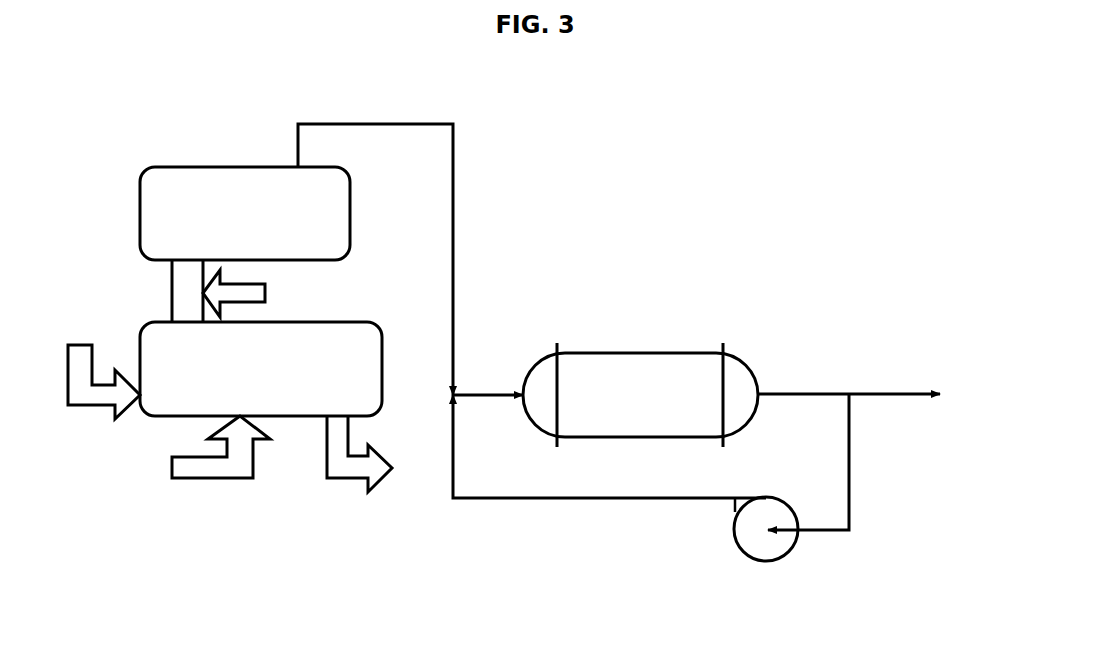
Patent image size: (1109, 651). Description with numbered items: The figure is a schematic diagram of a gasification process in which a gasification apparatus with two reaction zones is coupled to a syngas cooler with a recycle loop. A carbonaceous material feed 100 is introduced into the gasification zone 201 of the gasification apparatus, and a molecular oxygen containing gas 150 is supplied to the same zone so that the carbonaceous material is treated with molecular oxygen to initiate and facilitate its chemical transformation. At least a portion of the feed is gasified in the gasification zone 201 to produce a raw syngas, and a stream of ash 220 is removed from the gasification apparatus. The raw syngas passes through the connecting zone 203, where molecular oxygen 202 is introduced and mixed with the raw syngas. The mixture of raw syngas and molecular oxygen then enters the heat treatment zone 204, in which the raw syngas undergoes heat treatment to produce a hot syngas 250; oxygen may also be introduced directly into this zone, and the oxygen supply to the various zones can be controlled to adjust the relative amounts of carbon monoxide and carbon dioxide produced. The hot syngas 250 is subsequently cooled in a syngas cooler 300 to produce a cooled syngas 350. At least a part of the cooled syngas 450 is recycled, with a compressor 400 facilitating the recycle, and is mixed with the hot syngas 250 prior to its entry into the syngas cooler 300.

The carbonaceous material feed 100 is at (103, 370).
The molecular oxygen containing gas 150 is at (221, 462).
The gasification zone 201 is at (261, 369).
The molecular oxygen 202 is at (257, 293).
The connecting zone 203 is at (187, 291).
The heat treatment zone 204 is at (245, 213).
The stream of ash 220 is at (358, 462).
The hot syngas 250 is at (410, 250).
The syngas cooler 300 is at (640, 395).
The cooled syngas 350 is at (849, 383).
The compressor 400 is at (771, 477).
The recycled cooled syngas 450 is at (609, 446).